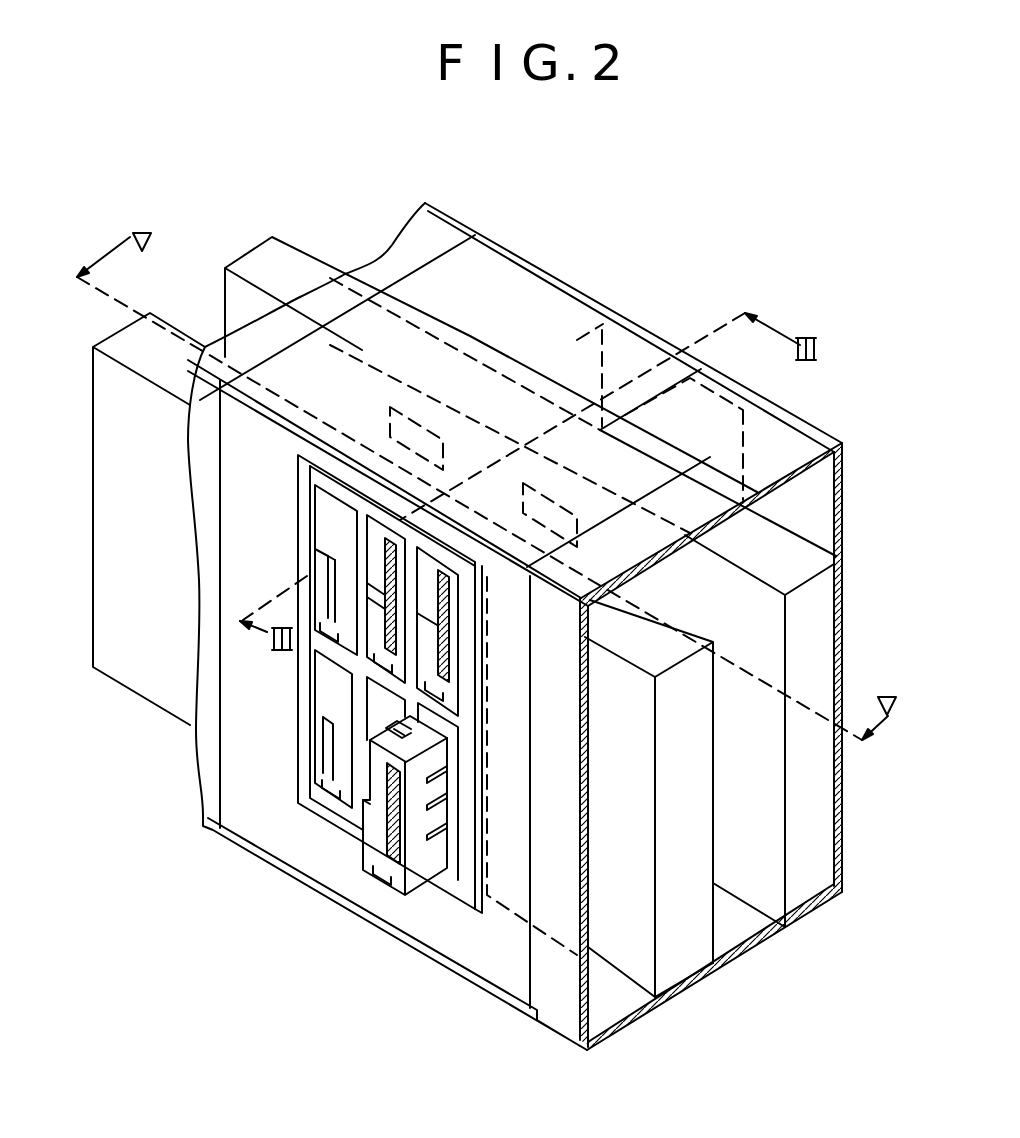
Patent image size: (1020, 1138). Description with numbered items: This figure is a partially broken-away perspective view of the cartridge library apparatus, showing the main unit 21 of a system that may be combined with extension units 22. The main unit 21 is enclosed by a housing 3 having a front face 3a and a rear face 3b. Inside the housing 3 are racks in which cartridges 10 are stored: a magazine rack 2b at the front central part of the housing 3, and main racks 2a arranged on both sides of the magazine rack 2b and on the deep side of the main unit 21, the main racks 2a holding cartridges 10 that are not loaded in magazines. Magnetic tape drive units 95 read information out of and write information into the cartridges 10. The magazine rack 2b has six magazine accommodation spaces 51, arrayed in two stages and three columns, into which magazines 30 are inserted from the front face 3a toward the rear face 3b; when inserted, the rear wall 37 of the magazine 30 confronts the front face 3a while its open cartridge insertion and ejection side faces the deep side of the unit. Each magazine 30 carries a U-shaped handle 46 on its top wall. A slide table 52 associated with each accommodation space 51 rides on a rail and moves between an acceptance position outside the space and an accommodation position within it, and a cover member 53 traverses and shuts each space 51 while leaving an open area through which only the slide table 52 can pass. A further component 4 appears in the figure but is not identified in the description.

The main rack 2a is at (170, 330).
The magazine rack 2b is at (457, 493).
The housing 3 is at (553, 277).
The front face of the housing 3a is at (580, 1000).
The rear face of the housing 3b is at (847, 547).
The connector 4 is at (340, 506).
The cartridge 10 is at (395, 768).
The main unit 21 is at (510, 238).
The extension unit 22 is at (442, 200).
The magazine 30 is at (415, 862).
The rear wall of the magazine body 37 is at (378, 757).
The handle 46 is at (410, 731).
The magazine accommodation space 51 is at (380, 530).
The slide table 52 is at (328, 565).
The cover member 53 is at (332, 542).
The magnetic tape drive unit 95 is at (603, 297).